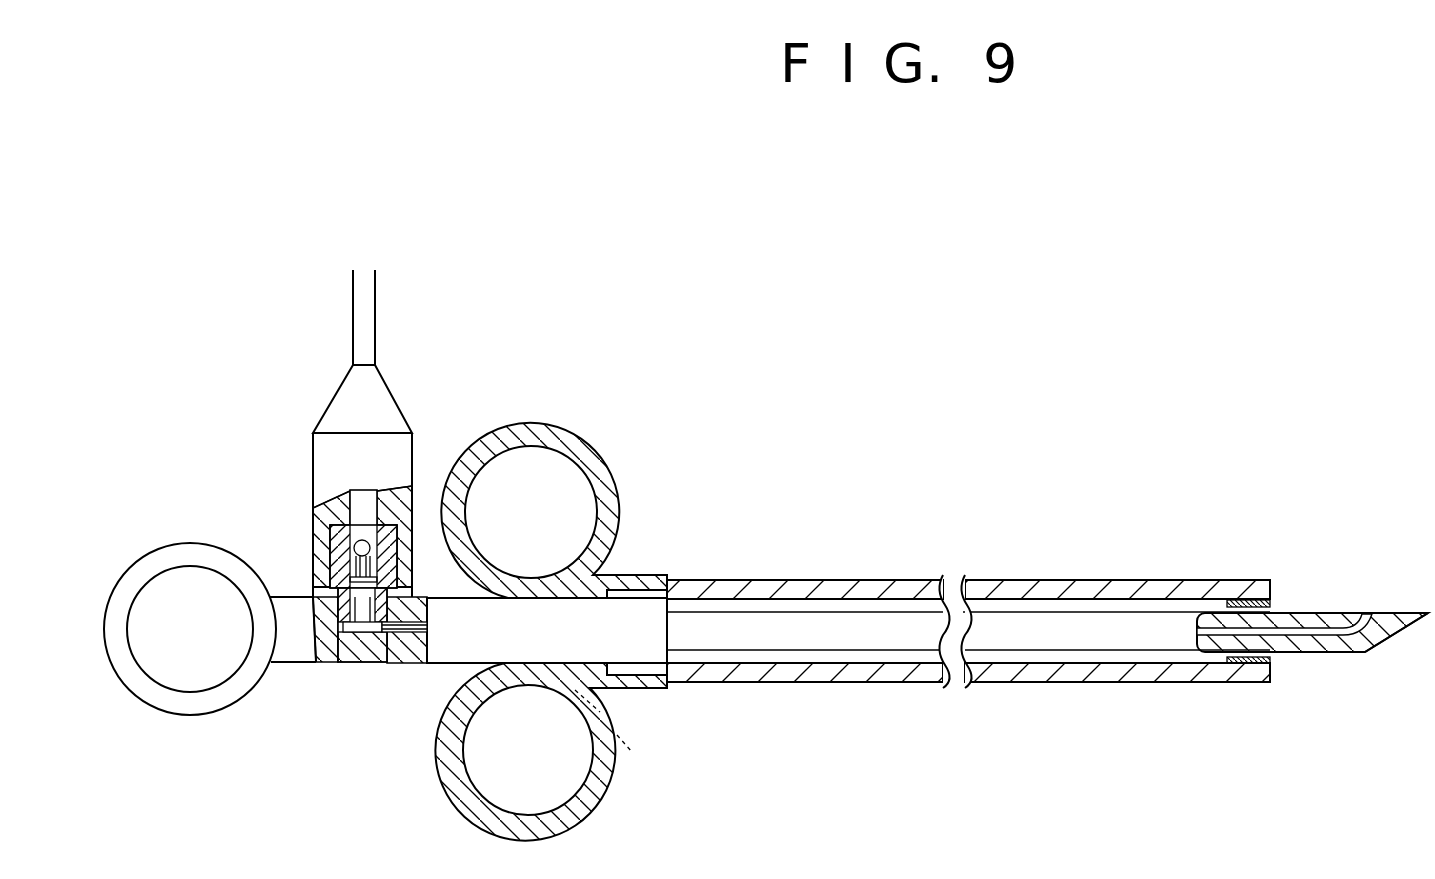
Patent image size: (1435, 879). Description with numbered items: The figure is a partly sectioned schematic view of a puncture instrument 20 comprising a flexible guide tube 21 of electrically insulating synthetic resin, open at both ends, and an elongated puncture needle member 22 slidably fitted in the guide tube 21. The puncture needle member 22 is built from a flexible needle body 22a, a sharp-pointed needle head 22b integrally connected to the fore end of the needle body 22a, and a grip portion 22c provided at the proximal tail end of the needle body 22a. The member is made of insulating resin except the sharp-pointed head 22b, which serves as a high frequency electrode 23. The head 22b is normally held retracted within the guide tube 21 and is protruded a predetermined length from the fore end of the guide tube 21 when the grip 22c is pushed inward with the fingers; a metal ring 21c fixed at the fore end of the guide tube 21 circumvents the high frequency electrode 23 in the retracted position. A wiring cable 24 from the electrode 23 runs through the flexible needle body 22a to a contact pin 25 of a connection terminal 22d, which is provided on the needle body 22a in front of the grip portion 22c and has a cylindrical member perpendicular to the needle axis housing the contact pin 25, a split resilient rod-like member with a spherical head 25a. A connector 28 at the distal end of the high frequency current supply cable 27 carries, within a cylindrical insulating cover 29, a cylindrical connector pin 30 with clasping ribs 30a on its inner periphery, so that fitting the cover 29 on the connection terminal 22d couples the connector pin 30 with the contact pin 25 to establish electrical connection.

The puncture instrument 20 is at (1019, 536).
The flexible guide tube 21 is at (968, 700).
The metal ring 21c is at (1252, 698).
The puncture needle member 22 is at (1055, 664).
The flexible needle body 22a is at (848, 695).
The sharp-pointed needle head 22b is at (1381, 711).
The grip portion 22c is at (210, 686).
The connection terminal 22d is at (303, 576).
The high frequency electrode 23 is at (1396, 578).
The wiring cable 24 is at (1312, 552).
The contact pin 25 is at (361, 674).
The spherical head 25a is at (324, 522).
The high frequency current supply cable 27 is at (315, 308).
The connector 28 is at (318, 386).
The cylindrical insulating cover 29 is at (288, 679).
The connector pin 30 is at (312, 465).
The clasping ribs 30a is at (405, 443).